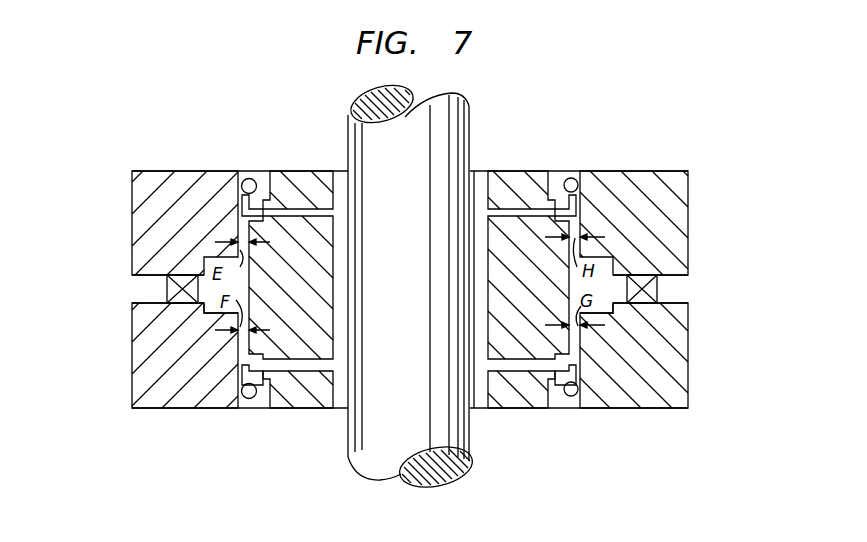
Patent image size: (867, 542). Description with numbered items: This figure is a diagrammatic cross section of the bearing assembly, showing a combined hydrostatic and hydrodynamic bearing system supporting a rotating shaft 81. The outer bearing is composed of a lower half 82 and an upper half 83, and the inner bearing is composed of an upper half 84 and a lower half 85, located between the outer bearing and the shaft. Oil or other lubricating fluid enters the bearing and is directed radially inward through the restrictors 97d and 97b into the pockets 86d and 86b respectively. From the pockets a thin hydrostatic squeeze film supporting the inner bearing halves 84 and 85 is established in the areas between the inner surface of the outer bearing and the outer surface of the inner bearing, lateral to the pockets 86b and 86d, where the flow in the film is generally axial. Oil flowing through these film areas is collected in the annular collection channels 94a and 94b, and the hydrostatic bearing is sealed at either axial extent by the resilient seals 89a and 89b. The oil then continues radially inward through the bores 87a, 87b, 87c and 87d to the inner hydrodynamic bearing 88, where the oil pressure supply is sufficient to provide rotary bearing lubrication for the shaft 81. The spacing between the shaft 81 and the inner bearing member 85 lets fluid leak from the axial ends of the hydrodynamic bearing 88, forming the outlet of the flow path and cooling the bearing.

The rotating shaft 81 is at (378, 450).
The lower half of outer bearing 82 is at (173, 170).
The upper half of outer bearing 83 is at (641, 170).
The upper half of inner bearing 84 is at (541, 170).
The lower half of inner bearing 85 is at (287, 170).
The pocket 86b is at (204, 312).
The pocket 86d is at (604, 306).
The bore 87a is at (266, 198).
The bore 87b is at (297, 406).
The bore 87c is at (502, 207).
The bore 87d is at (538, 366).
The inner hydrodynamic bearing 88 is at (343, 188).
The resilient seal 89a is at (574, 170).
The resilient seal 89b is at (578, 394).
The annular collection channel 94a is at (250, 366).
The annular collection channel 94b is at (240, 208).
The restrictor 97b is at (133, 288).
The restrictor 97d is at (688, 283).